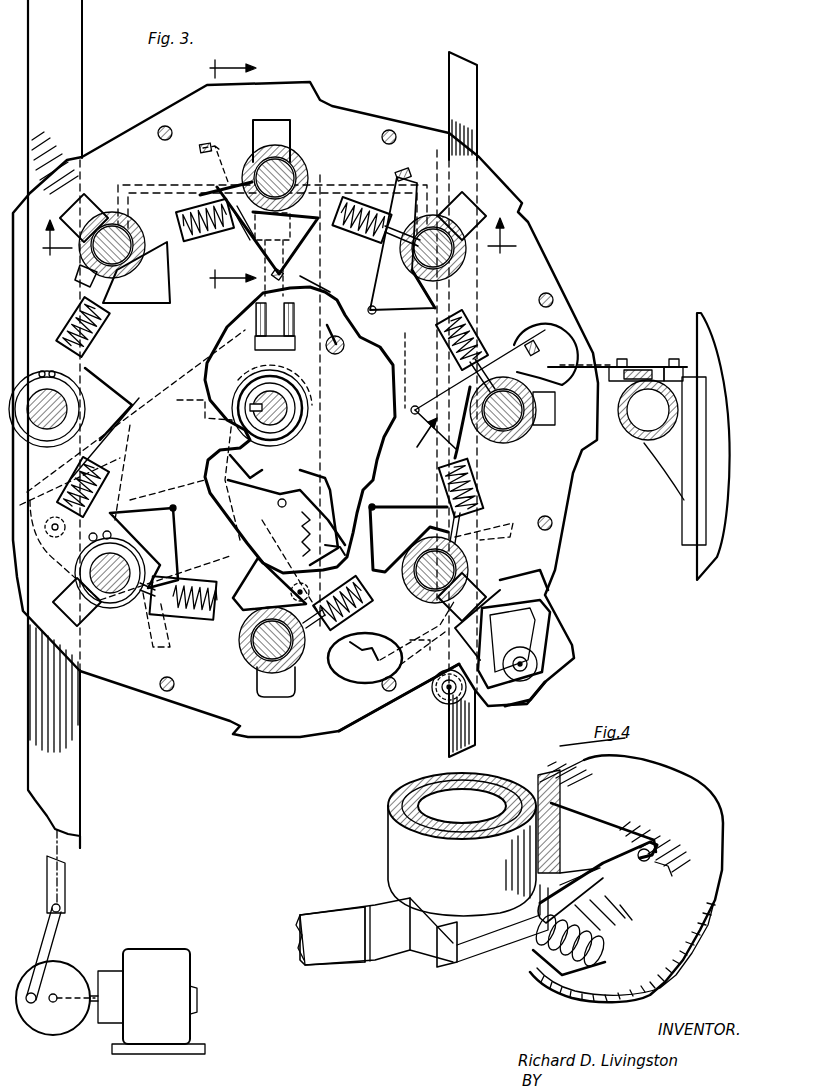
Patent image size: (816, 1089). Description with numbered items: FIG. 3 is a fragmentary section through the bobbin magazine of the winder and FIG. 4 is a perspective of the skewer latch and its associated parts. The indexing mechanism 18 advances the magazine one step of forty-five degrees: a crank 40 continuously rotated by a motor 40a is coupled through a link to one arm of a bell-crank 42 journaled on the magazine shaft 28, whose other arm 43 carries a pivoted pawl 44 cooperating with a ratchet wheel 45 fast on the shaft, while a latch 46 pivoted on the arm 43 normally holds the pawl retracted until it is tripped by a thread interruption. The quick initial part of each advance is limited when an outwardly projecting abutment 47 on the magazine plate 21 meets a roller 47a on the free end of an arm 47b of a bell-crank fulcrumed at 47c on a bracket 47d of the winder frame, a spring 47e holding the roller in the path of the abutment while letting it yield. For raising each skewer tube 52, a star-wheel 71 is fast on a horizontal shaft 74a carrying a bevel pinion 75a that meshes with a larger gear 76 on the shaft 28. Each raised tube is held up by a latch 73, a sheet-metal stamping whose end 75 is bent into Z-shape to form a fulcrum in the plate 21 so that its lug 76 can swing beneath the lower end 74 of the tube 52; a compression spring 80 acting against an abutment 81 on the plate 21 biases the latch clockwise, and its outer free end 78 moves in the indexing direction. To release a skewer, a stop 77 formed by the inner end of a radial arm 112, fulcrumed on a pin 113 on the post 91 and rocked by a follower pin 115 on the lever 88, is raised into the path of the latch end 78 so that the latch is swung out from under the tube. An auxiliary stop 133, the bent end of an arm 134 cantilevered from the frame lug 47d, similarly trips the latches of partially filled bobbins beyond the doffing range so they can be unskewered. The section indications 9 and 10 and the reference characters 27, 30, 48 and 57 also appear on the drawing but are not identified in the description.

In FIG. 3, the section line 9- 9 is at (226, 179).
In FIG. 3, the section line 10- 10 is at (283, 245).
In FIG. 3, the indexing mechanism 18 is at (236, 333).
In FIG. 3, the magazine plate 21 is at (292, 740).
In FIG. 4, the magazine plate 21 is at (716, 826).
In FIG. 3, the mounting bolts 27 is at (165, 125).
In FIG. 3, the magazine shaft 28 is at (256, 420).
In FIG. 3, the frame bar 30 is at (468, 104).
In FIG. 3, the crank 40 is at (64, 972).
In FIG. 3, the motor 40a is at (154, 950).
In FIG. 3, the bell-crank 42 is at (177, 400).
In FIG. 3, the arm 43 is at (320, 490).
In FIG. 3, the pawl 44 is at (253, 526).
In FIG. 3, the ratchet wheel 45 is at (250, 473).
In FIG. 3, the latch 46 is at (338, 550).
In FIG. 3, the abutment 47 is at (468, 656).
In FIG. 3, the roller 47a is at (440, 696).
In FIG. 3, the arm 47b is at (490, 690).
In FIG. 3, the fulcrum 47c is at (550, 680).
In FIG. 3, the bracket 47d is at (572, 650).
In FIG. 3, the spring 47e is at (548, 588).
In FIG. 3, the roller assembly 48 is at (117, 620).
In FIG. 4, the roller assembly 48 is at (462, 806).
In FIG. 3, the skewer tube 52 is at (295, 163).
In FIG. 4, the skewer tube 52 is at (385, 853).
In FIG. 3, the roller 57 is at (522, 432).
In FIG. 4, the roller 57 is at (544, 816).
In FIG. 3, the star-wheel 71 is at (153, 184).
In FIG. 3, the skewer latch 73 is at (168, 262).
In FIG. 4, the skewer latch 73 is at (610, 872).
In FIG. 4, the lower end of tube 74 is at (432, 920).
In FIG. 3, the horizontal shaft 74a is at (315, 276).
In FIG. 3, the Z-shaped end 75 is at (372, 322).
In FIG. 4, the Z-shaped end 75 is at (666, 870).
In FIG. 3, the bevel pinion 75a is at (330, 344).
In FIG. 3, the gear 76 is at (318, 436).
In FIG. 4, the gear 76 is at (505, 928).
In FIG. 3, the stop 77 is at (582, 360).
In FIG. 4, the stop 77 is at (353, 931).
In FIG. 3, the outer free end of latch 78 is at (545, 330).
In FIG. 4, the outer free end of latch 78 is at (447, 944).
In FIG. 3, the compression spring 80 is at (465, 332).
In FIG. 4, the compression spring 80 is at (600, 938).
In FIG. 3, the abutment 81 is at (478, 480).
In FIG. 4, the abutment 81 is at (612, 958).
In FIG. 3, the lever 88 is at (642, 366).
In FIG. 3, the post 91 is at (636, 440).
In FIG. 3, the arm 112 is at (600, 366).
In FIG. 4, the arm 112 is at (332, 936).
In FIG. 3, the pin 113 is at (684, 346).
In FIG. 3, the follower pin 115 is at (623, 358).
In FIG. 3, the auxiliary stop 133 is at (360, 672).
In FIG. 3, the arm 134 is at (406, 638).